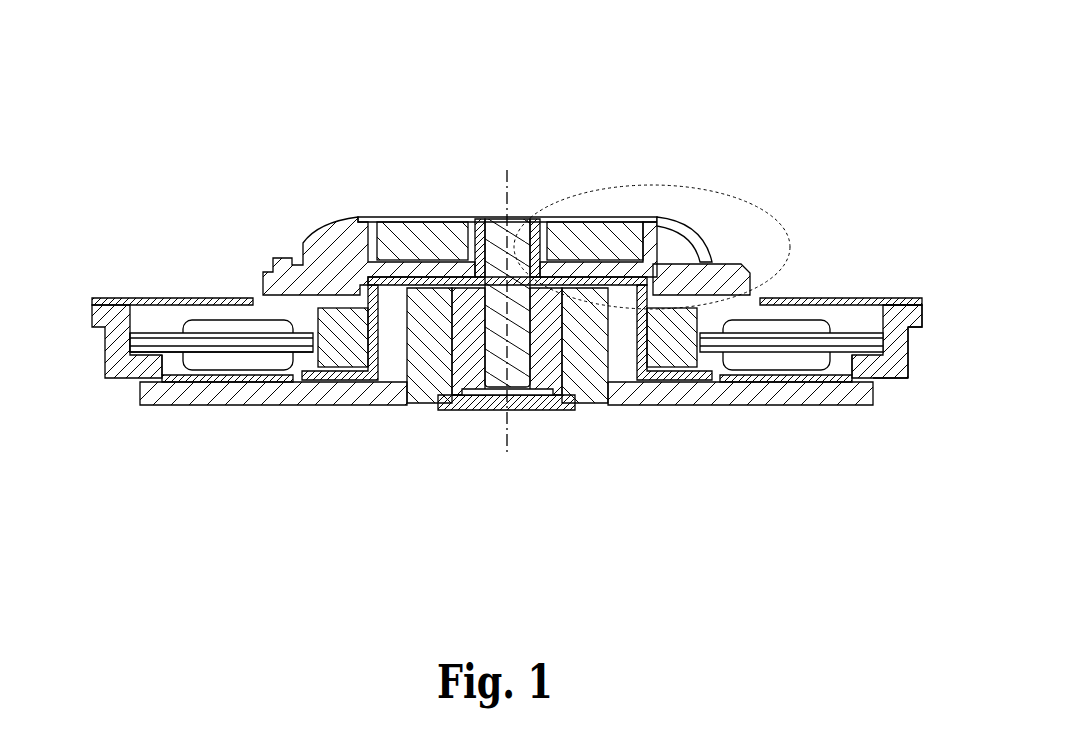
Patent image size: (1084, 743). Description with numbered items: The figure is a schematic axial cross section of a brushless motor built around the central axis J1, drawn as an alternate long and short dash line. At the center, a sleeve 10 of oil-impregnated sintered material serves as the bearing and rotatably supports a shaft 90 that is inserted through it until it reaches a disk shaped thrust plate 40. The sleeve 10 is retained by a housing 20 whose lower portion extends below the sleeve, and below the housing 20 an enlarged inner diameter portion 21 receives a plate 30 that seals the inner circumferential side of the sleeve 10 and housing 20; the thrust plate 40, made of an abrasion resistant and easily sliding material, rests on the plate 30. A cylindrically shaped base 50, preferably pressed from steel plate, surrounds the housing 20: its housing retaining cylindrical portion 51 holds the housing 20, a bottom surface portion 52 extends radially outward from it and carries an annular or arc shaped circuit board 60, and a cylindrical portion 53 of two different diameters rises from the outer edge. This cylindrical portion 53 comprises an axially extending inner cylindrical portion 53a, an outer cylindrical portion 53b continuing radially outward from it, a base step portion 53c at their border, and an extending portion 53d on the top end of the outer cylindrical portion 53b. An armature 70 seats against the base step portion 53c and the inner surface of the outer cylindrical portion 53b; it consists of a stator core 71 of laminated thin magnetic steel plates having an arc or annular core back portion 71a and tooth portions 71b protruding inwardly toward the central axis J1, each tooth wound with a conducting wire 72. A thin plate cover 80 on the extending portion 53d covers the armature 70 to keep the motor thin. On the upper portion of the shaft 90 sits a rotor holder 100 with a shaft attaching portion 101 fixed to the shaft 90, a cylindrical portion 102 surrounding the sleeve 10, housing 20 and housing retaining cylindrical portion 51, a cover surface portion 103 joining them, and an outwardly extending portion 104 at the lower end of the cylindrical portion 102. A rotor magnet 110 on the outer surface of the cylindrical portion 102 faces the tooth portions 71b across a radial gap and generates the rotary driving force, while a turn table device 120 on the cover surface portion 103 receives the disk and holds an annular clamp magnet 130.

The sleeve 10 is at (462, 365).
The housing 20 is at (595, 423).
The enlarged inner diameter portion 21 is at (447, 382).
The plate 30 is at (568, 406).
The thrust plate 40 is at (477, 392).
The base 50 is at (746, 424).
The housing retaining cylindrical portion 51 is at (630, 362).
The bottom surface portion 52 is at (697, 372).
The cylindrical portion 53 is at (914, 405).
The inner cylindrical portion 53a is at (867, 383).
The outer cylindrical portion 53b is at (902, 353).
The base step portion 53c is at (885, 367).
The extending portion 53d is at (90, 297).
The circuit board 60 is at (168, 380).
The armature 70 is at (160, 380).
The stator core 71 is at (250, 352).
The core back portion 71a is at (128, 355).
The tooth portion 71b is at (228, 352).
The wire 72 is at (262, 322).
The cover 80 is at (177, 300).
The shaft 90 is at (493, 223).
The rotor holder 100 is at (473, 210).
The shaft attaching portion 101 is at (558, 232).
The cylindrical portion 102 is at (365, 278).
The cover surface portion 103 is at (412, 272).
The outwardly extending portion 104 is at (348, 345).
The rotor magnet 110 is at (372, 340).
The turn table device 120 is at (304, 206).
The clamp magnet 130 is at (612, 233).
The central axis J1 is at (507, 202).